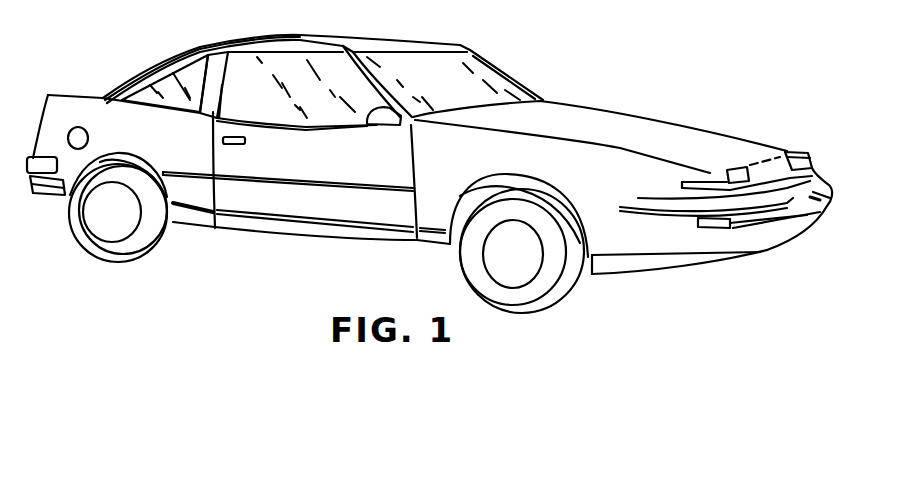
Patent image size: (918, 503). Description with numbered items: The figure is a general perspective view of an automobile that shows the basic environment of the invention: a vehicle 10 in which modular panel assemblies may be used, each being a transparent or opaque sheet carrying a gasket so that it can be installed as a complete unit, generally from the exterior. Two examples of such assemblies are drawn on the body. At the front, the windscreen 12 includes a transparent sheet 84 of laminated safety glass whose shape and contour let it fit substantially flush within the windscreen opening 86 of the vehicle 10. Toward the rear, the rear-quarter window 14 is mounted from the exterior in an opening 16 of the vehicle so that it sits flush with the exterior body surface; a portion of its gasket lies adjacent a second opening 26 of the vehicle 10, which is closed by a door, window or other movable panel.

The vehicle 10 is at (587, 23).
The front windscreen 12 is at (500, 67).
The rear-quarter window 14 is at (163, 87).
The opening 16 is at (188, 65).
The second opening 26 is at (220, 88).
The transparent sheet 84 is at (463, 84).
The windscreen opening 86 is at (413, 52).